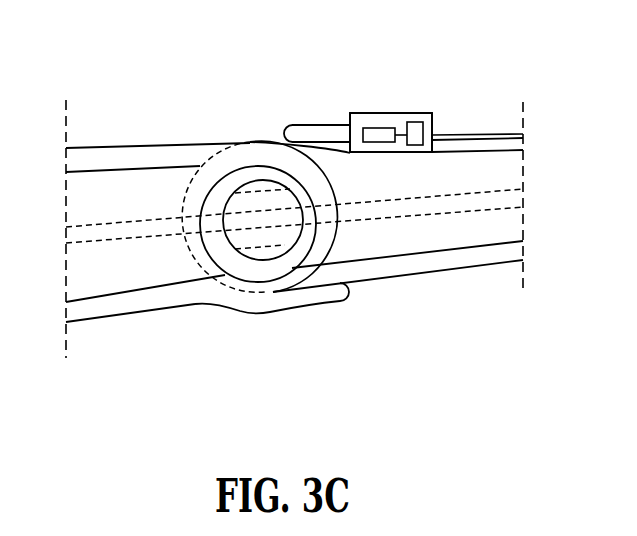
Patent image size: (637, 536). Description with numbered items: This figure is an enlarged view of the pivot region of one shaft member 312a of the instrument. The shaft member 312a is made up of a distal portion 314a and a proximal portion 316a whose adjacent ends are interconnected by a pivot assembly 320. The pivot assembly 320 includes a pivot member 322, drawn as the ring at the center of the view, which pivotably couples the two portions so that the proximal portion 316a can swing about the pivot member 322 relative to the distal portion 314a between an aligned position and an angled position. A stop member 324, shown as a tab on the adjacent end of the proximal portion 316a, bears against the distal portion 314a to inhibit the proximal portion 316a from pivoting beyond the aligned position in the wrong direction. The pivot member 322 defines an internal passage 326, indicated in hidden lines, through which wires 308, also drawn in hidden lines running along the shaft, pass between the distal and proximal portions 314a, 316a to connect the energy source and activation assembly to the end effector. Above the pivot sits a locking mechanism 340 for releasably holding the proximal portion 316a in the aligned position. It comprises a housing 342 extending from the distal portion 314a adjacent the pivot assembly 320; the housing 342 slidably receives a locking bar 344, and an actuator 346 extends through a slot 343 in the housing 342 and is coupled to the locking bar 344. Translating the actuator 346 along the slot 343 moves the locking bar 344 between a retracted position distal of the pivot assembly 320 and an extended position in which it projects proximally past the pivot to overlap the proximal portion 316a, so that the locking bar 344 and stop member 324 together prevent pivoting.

The wires 308 is at (500, 190).
The shaft member 312a is at (134, 120).
The distal portion 314a is at (135, 280).
The proximal portion 316a is at (410, 240).
The pivot assembly 320 is at (295, 332).
The pivot member 322 is at (258, 180).
The stop member 324 is at (337, 301).
The internal passage 326 is at (257, 248).
The locking mechanism 340 is at (440, 93).
The housing 342 is at (433, 113).
The slot 343 is at (382, 128).
The locking bar 344 is at (320, 125).
The actuator 346 is at (432, 133).